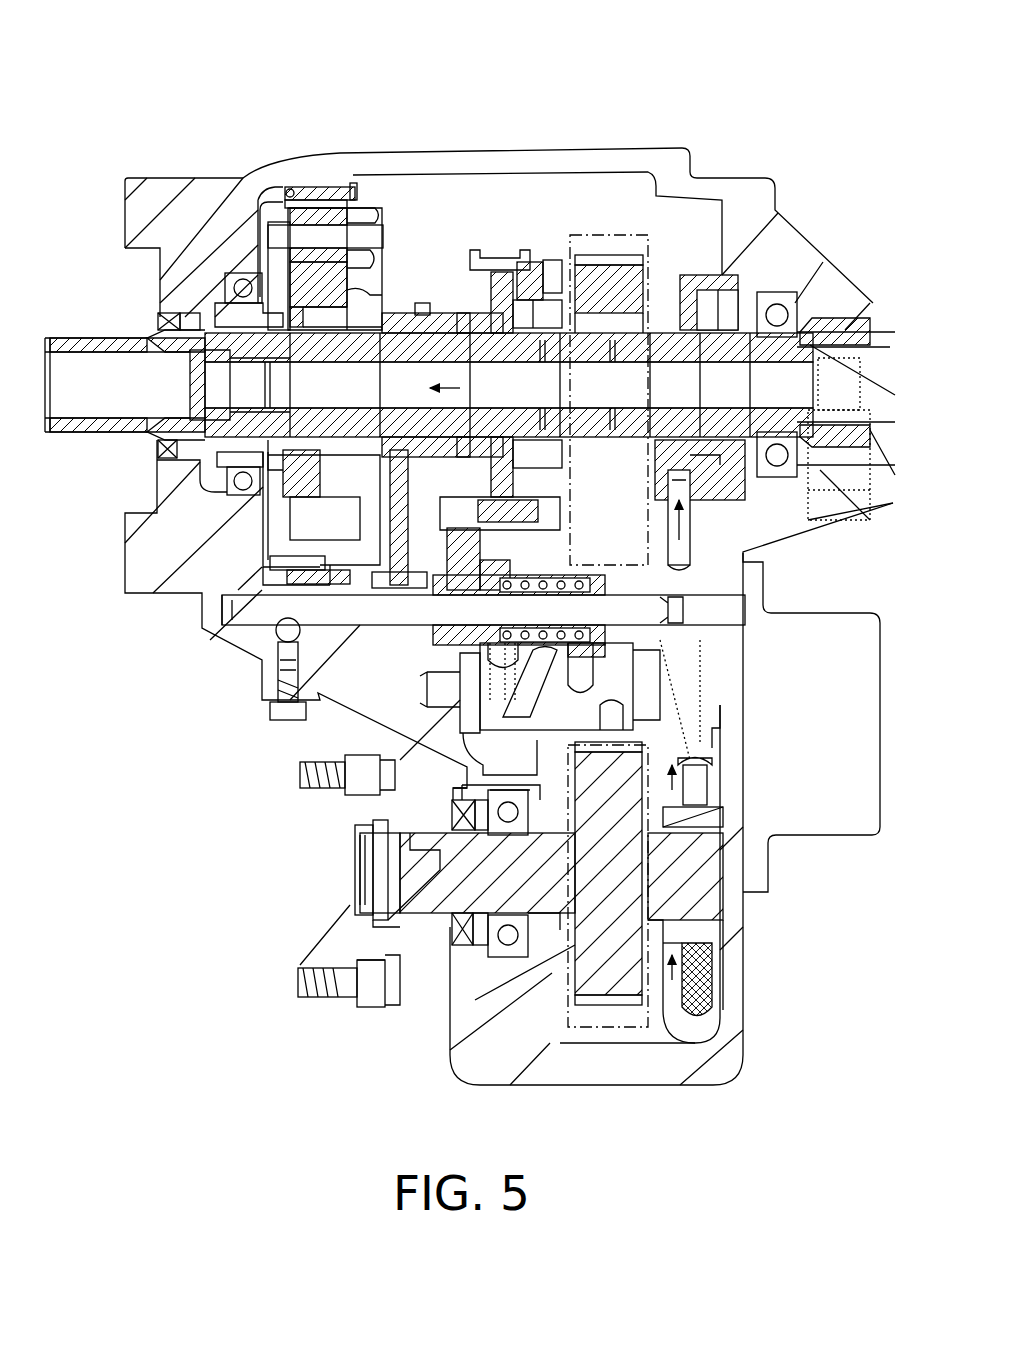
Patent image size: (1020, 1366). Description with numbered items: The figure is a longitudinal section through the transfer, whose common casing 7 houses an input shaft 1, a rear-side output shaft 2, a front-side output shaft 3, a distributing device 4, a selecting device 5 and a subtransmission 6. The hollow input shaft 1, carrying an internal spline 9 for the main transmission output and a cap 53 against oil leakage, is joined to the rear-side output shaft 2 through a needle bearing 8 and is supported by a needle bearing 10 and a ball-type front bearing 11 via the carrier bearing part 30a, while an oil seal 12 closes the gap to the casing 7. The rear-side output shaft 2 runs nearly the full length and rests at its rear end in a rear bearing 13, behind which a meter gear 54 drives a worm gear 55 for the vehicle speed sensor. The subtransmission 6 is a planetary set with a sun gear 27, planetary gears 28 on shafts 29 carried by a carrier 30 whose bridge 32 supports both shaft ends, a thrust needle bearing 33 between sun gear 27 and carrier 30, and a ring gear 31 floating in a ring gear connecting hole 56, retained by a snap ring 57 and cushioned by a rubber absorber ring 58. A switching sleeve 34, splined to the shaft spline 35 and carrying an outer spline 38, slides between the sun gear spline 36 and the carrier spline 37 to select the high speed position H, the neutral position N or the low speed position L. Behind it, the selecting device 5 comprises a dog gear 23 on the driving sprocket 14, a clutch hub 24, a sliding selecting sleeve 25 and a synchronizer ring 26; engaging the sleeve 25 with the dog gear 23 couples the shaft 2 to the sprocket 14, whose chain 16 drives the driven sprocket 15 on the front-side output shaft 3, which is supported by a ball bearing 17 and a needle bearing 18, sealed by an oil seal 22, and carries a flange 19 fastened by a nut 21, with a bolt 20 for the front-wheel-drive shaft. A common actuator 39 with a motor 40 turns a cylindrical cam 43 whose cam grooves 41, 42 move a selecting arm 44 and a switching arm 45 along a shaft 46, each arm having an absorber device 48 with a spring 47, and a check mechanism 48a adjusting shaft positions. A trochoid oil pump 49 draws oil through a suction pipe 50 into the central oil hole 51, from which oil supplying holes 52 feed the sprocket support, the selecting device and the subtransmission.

The input shaft 1 is at (76, 338).
The rear-side output shaft 2 is at (878, 318).
The front-side output shaft 3 is at (450, 915).
The distributing device 4 is at (618, 218).
The selecting device 5 is at (510, 225).
The subtransmission 6 is at (385, 190).
The transfer casing 7 is at (192, 182).
The needle bearing 8 is at (212, 360).
The spline 9 is at (104, 352).
The needle bearing 10 is at (200, 297).
The front bearing 11 is at (240, 272).
The oil seal 12 is at (157, 320).
The rear bearing 13 is at (768, 300).
The driving sprocket 14 is at (625, 295).
The driven sprocket 15 is at (615, 1005).
The chain 16 is at (612, 232).
The ball bearing 17 is at (502, 957).
The needle bearing 18 is at (695, 900).
The flange 19 is at (362, 1007).
The bolt 20 is at (318, 780).
The nut 21 is at (352, 912).
The oil seal 22 is at (455, 805).
The dog gear 23 is at (552, 260).
The clutch hub 24 is at (490, 280).
The selecting sleeve 25 is at (478, 252).
The synchronizer ring 26 is at (520, 300).
The sun gear 27 is at (375, 290).
The planetary gears 28 is at (372, 238).
The shaft 29 is at (375, 220).
The carrier 30 is at (340, 190).
The carrier bearing part 30a is at (222, 303).
The ring gear 31 is at (300, 188).
The bridge 32 is at (258, 545).
The thrust needle bearing 33 is at (272, 280).
The switching sleeve 34 is at (388, 350).
The spline 35 is at (415, 330).
The sun gear spline 36 is at (305, 440).
The carrier spline 37 is at (398, 455).
The spline 38 is at (340, 500).
The actuator 39 is at (815, 600).
The motor 40 is at (815, 825).
The cam groove 41 is at (505, 715).
The cam groove 42 is at (580, 680).
The cylindrical cam 43 is at (560, 735).
The selecting arm 44 is at (470, 508).
The switching arm 45 is at (445, 560).
The shaft 46 is at (335, 628).
The spring 47 is at (538, 575).
The absorber device 48 is at (585, 570).
The check mechanism 48a is at (268, 645).
The oil pump 49 is at (710, 272).
The suction pipe 50 is at (715, 780).
The oil hole 51 is at (700, 348).
The oil supplying holes 52 is at (270, 400).
The cap 53 is at (188, 383).
The meter gear 54 is at (828, 318).
The worm gear 55 is at (862, 360).
The ring gear connecting hole 56 is at (288, 188).
The snap ring 57 is at (353, 182).
The absorber ring 58 is at (288, 192).
The high position H is at (331, 380).
The neutral position N is at (352, 380).
The low position L is at (369, 380).